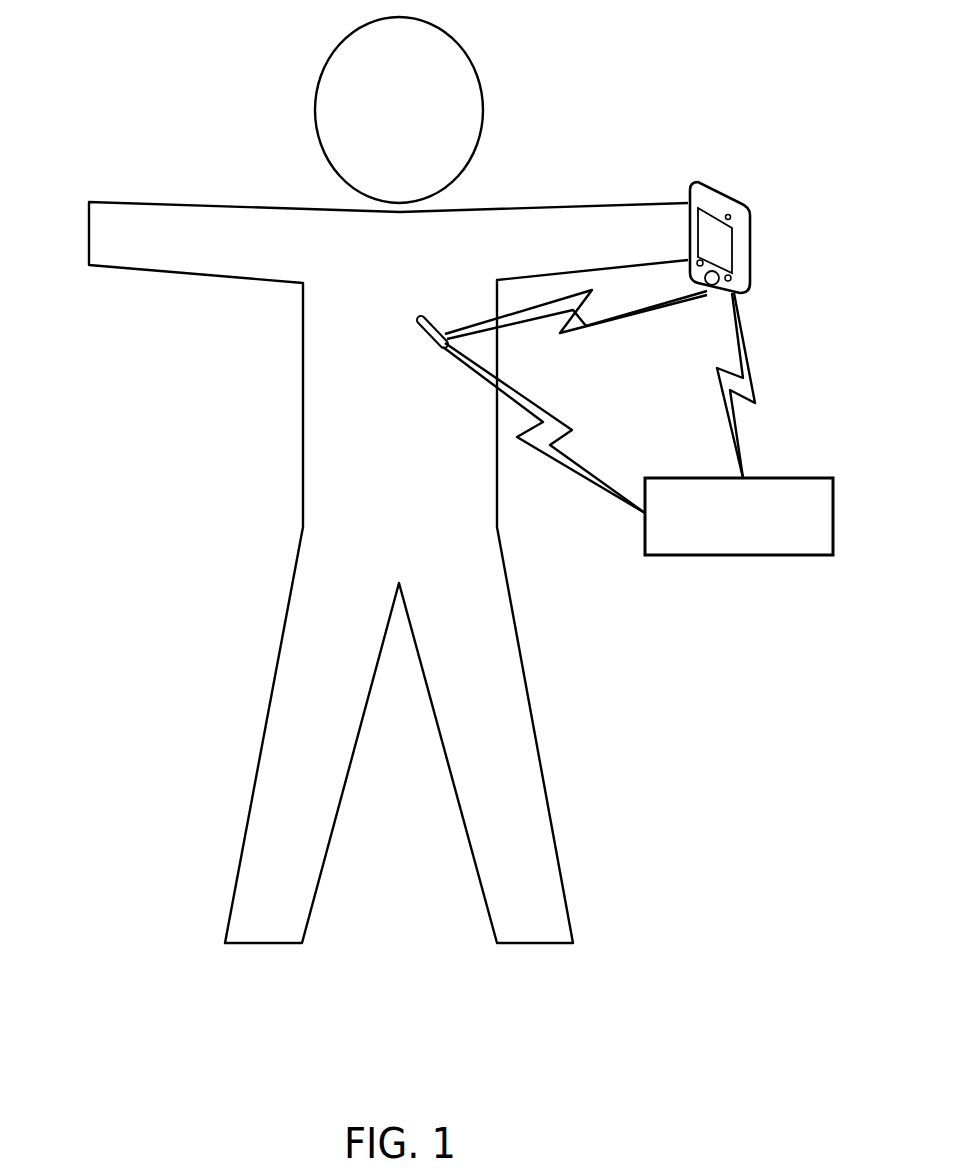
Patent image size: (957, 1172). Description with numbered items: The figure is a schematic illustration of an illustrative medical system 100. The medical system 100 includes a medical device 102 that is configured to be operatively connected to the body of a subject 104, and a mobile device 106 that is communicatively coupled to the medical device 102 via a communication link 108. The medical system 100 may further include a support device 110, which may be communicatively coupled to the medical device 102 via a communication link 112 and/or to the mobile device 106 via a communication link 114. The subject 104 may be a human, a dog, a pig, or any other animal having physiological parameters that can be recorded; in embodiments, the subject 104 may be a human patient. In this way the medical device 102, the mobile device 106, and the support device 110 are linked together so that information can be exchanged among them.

The medical system 100 is at (805, 660).
The medical device 102 is at (418, 328).
The subject 104 is at (525, 728).
The mobile device 106 is at (753, 222).
The communication link 108 is at (587, 328).
The support device 110 is at (738, 556).
The communication link 112 is at (563, 438).
The communication link 114 is at (755, 380).